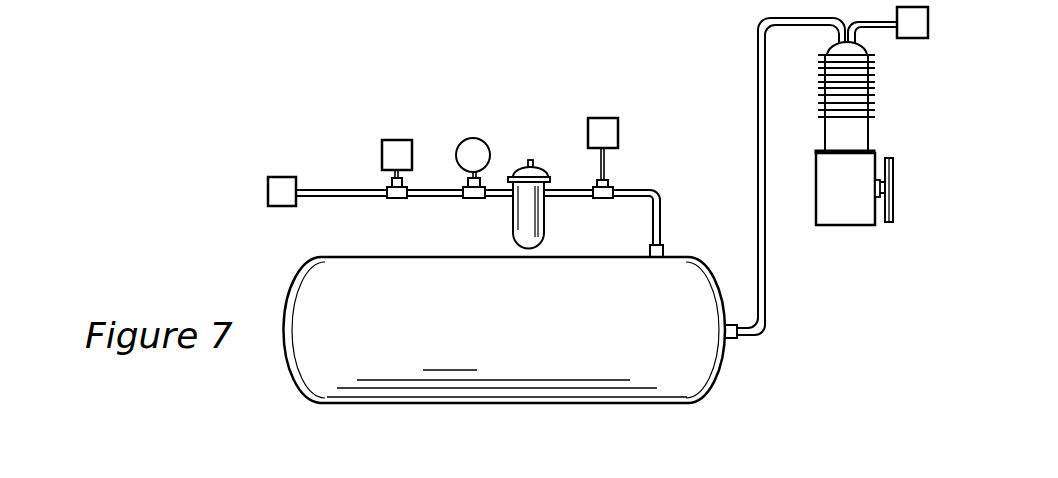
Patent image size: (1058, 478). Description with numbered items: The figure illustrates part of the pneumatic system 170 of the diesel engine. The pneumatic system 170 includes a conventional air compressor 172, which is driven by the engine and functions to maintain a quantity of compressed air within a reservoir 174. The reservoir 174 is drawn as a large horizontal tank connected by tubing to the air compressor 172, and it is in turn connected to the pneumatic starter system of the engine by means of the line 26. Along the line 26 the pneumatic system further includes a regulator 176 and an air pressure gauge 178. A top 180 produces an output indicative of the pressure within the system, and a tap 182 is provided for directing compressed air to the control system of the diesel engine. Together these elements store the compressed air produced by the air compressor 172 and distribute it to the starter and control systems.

The pneumatic system 170 is at (332, 134).
The line 26 is at (322, 189).
The tap 182 is at (386, 180).
The air pressure gauge 178 is at (470, 139).
The regulator 176 is at (525, 227).
The top 180 is at (608, 183).
The reservoir 174 is at (502, 336).
The air compressor 172 is at (812, 102).